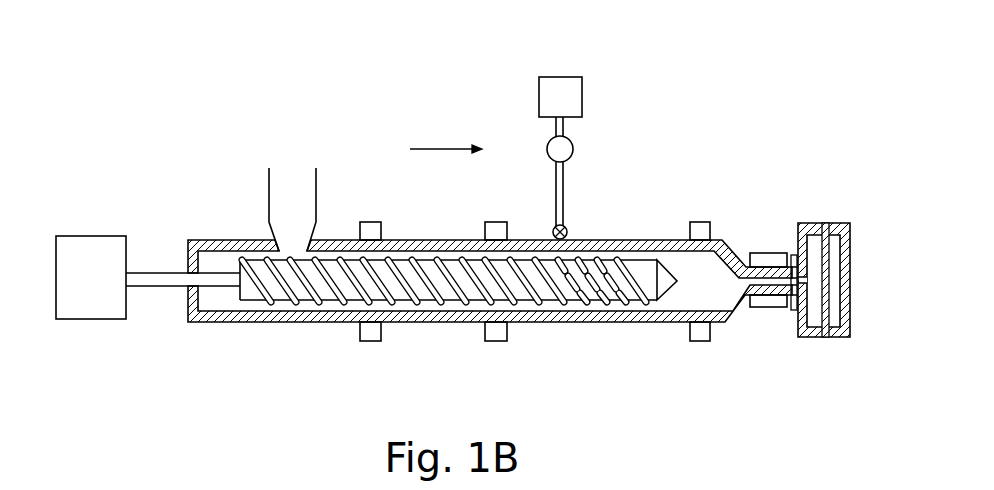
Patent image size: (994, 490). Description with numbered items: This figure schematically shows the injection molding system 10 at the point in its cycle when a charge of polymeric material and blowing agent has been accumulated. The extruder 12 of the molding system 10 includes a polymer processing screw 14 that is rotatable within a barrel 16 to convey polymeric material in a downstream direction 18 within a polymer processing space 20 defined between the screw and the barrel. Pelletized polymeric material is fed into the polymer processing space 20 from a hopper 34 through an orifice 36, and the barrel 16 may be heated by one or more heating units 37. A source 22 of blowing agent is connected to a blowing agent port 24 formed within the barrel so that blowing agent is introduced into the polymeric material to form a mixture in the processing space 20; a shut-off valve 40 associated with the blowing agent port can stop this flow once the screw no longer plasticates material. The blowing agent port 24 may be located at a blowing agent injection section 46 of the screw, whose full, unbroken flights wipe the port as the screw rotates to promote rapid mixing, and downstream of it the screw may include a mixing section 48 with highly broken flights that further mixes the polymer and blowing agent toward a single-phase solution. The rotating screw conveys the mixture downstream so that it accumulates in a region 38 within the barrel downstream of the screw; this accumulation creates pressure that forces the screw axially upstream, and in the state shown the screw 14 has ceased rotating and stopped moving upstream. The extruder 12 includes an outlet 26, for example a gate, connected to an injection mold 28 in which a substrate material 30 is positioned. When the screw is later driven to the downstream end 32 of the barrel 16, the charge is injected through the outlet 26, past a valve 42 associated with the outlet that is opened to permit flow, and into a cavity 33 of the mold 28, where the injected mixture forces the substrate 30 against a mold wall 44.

The injection molding system 10 is at (434, 66).
The extruder 12 is at (427, 358).
The polymer processing screw 14 is at (403, 262).
The barrel 16 is at (303, 327).
The downstream direction 18 is at (446, 139).
The polymer processing space 20 is at (475, 260).
The source of blowing agent 22 is at (568, 77).
The blowing agent port 24 is at (568, 230).
The outlet of the extruder 26 is at (770, 255).
The injection mold 28 is at (848, 253).
The substrate material 30 is at (830, 337).
The downstream end of barrel 32 is at (721, 348).
The cavity of mold 33 is at (808, 233).
The hopper 34 is at (268, 200).
The orifice 36 is at (288, 226).
The heating units 37 is at (367, 221).
The region within the barrel downstream of the screw 38 is at (717, 272).
The shut-off valve 40 is at (554, 226).
The valve 42 is at (793, 311).
The mold wall 44 is at (835, 278).
The blowing agent injection section 46 is at (550, 323).
The mixing section 48 is at (608, 323).